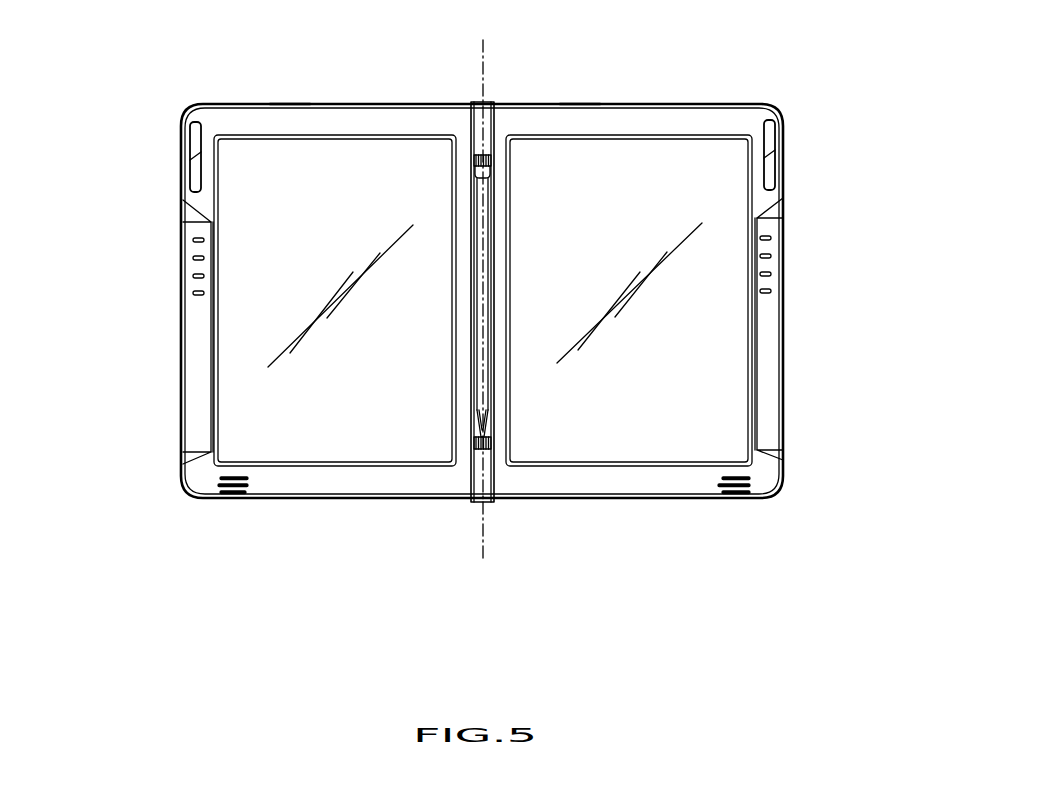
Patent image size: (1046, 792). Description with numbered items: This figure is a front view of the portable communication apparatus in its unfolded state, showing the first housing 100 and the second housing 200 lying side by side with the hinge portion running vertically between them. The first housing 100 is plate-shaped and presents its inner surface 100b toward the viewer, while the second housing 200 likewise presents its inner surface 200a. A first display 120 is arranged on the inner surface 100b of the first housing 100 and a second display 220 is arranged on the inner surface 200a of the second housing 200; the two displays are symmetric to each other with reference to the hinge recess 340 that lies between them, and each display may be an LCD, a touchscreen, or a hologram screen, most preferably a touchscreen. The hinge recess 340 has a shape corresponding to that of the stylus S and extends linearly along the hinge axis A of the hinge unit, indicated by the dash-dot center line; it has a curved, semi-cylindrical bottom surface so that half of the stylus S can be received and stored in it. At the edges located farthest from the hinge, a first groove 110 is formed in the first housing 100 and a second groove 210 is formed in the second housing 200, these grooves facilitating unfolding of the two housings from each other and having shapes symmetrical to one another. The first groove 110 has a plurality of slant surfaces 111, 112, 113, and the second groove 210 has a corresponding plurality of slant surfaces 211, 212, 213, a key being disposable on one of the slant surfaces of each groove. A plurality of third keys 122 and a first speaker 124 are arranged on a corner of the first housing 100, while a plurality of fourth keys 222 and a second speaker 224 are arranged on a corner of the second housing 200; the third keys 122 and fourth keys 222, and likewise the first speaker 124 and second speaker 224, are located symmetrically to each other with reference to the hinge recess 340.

The first housing 100 is at (717, 72).
The inner surface of the first housing 100b is at (582, 104).
The first groove 110 is at (811, 335).
The slant surface 111 is at (776, 212).
The slant surface 112 is at (778, 295).
The slant surface 113 is at (782, 459).
The first display 120 is at (728, 388).
The third keys 122 is at (770, 133).
The first speaker 124 is at (740, 494).
The second housing 200 is at (378, 106).
The inner surface of the second housing 200a is at (289, 104).
The second groove 210 is at (155, 335).
The slant surface 211 is at (192, 214).
The slant surface 212 is at (190, 308).
The slant surface 213 is at (190, 459).
The second display 220 is at (228, 403).
The fourth keys 222 is at (195, 138).
The second speaker 224 is at (226, 494).
The hinge recess 340 is at (498, 417).
The stylus S is at (489, 198).
The hinge axis A is at (483, 60).